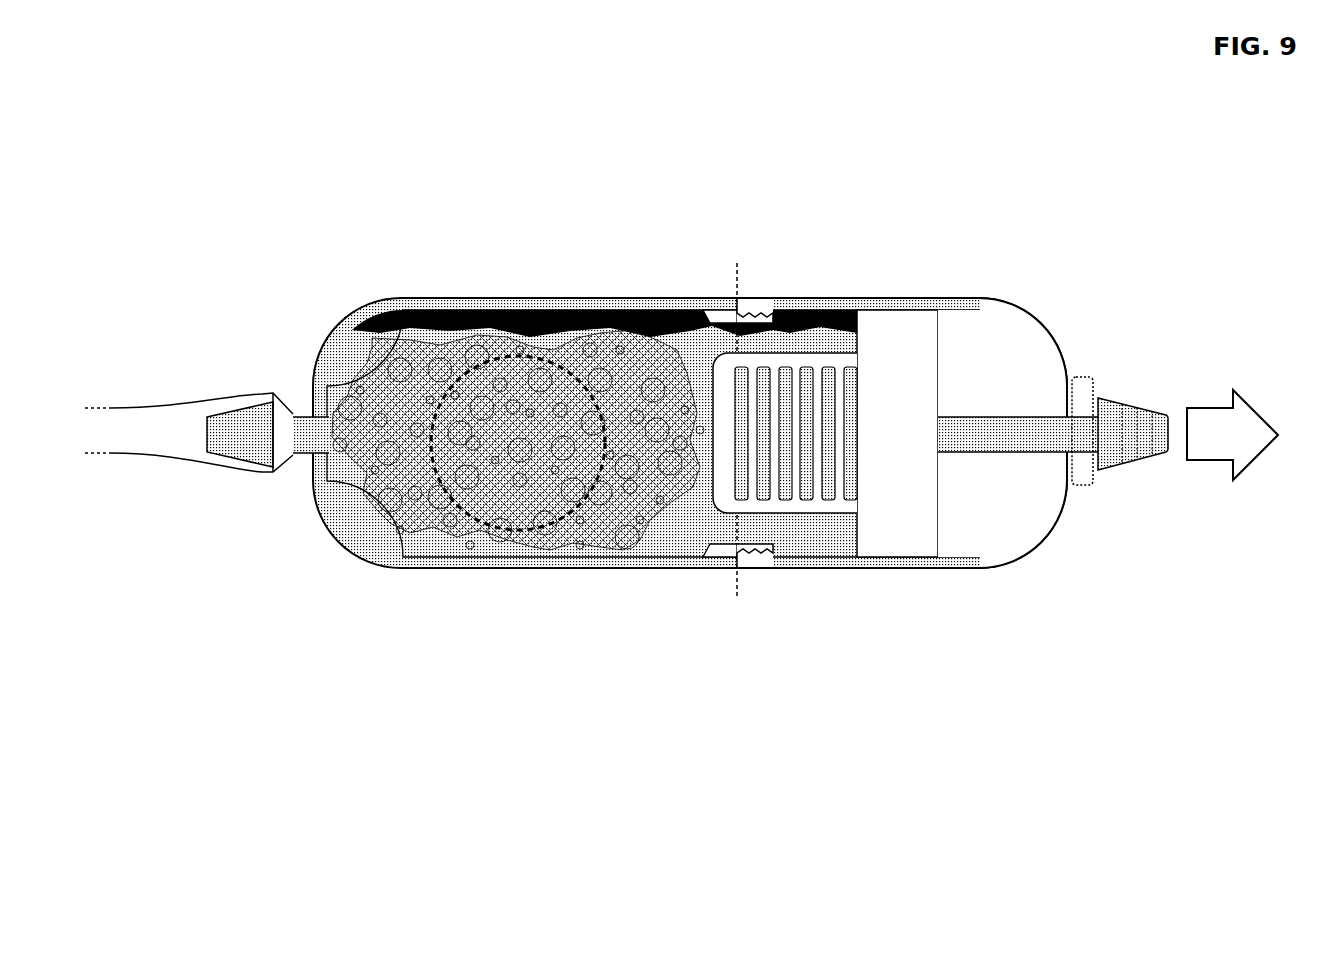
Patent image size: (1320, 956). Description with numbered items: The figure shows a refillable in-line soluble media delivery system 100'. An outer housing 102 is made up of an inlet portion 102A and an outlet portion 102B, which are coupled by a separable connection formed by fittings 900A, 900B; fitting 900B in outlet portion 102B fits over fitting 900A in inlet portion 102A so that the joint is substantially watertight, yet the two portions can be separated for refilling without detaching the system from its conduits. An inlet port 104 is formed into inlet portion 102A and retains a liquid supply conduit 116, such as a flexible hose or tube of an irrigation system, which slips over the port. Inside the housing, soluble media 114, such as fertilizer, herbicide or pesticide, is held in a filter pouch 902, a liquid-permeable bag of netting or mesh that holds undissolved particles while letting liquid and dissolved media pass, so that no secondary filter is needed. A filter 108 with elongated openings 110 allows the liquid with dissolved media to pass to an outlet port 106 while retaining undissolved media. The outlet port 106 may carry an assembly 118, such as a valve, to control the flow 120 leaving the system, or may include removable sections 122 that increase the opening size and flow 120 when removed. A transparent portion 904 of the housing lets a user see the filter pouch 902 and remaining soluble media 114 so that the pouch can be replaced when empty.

The system 100' is at (681, 411).
The outer housing 102 is at (335, 331).
The inlet portion 102A is at (720, 288).
The outlet portion 102B is at (795, 288).
The inlet port 104 is at (258, 404).
The outlet port 106 is at (1116, 402).
The filter 108 is at (907, 296).
The openings 110 is at (857, 418).
The soluble media 114 is at (378, 519).
The liquid supply conduit 116 is at (173, 453).
The assembly 118 is at (1083, 377).
The flow 120 is at (1242, 445).
The removable sections 122 is at (1122, 466).
The fitting 900A is at (713, 568).
The fitting 900B is at (758, 568).
The filter pouch 902 is at (345, 452).
The transparent portion 904 is at (483, 523).